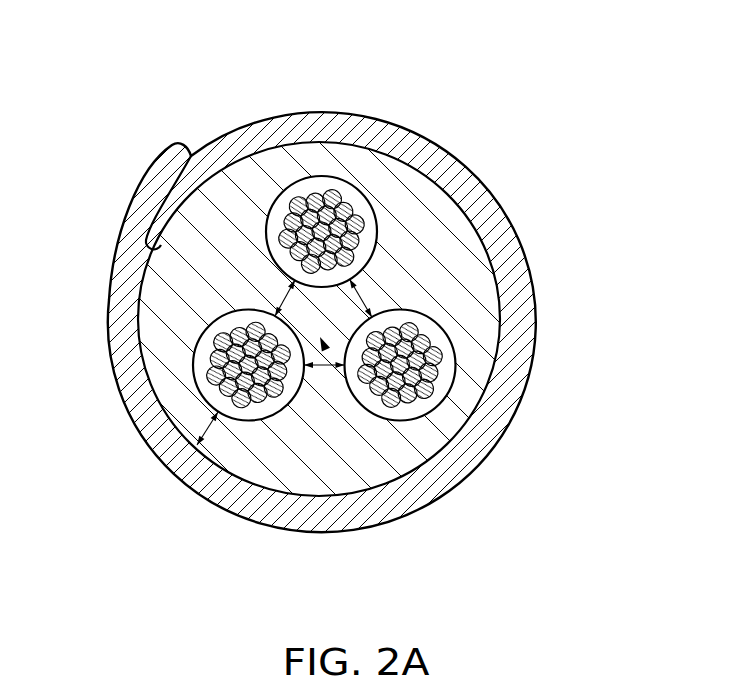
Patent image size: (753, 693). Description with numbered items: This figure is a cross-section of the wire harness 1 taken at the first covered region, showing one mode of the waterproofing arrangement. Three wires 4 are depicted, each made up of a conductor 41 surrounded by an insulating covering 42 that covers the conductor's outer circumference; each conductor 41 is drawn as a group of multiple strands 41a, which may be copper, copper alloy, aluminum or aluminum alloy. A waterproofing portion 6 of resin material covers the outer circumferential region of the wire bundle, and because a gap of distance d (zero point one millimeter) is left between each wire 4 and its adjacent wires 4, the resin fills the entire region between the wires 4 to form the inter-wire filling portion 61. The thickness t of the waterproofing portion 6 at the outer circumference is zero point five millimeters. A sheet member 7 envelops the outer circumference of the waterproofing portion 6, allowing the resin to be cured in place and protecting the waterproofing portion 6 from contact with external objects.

The wire harness 1 is at (357, 306).
The wire 4 is at (301, 297).
The conductor 41 is at (183, 249).
The strand 41a is at (214, 151).
The insulating covering 42 is at (316, 190).
The waterproofing portion 6 is at (472, 277).
The inter-wire filling portion 61 is at (327, 352).
The sheet member 7 is at (493, 222).